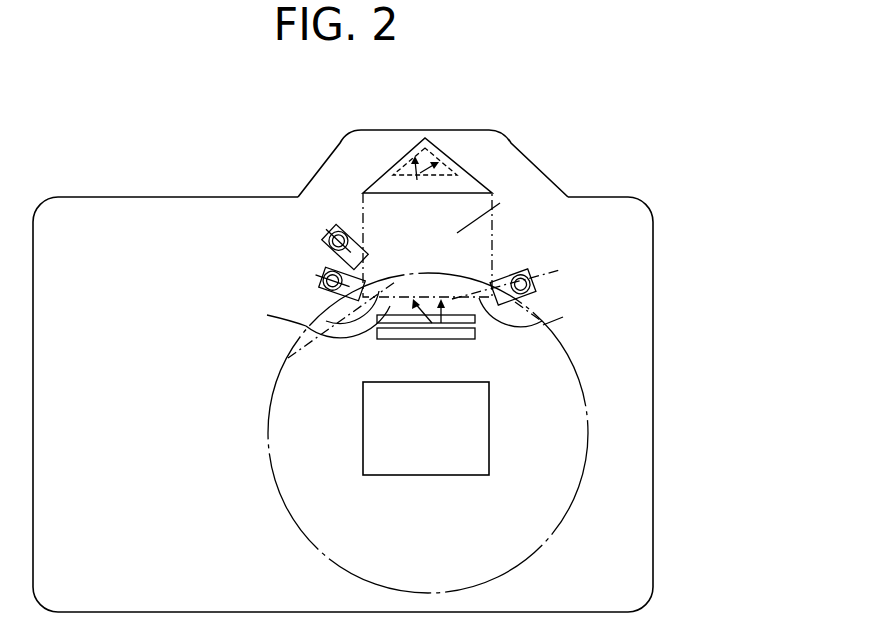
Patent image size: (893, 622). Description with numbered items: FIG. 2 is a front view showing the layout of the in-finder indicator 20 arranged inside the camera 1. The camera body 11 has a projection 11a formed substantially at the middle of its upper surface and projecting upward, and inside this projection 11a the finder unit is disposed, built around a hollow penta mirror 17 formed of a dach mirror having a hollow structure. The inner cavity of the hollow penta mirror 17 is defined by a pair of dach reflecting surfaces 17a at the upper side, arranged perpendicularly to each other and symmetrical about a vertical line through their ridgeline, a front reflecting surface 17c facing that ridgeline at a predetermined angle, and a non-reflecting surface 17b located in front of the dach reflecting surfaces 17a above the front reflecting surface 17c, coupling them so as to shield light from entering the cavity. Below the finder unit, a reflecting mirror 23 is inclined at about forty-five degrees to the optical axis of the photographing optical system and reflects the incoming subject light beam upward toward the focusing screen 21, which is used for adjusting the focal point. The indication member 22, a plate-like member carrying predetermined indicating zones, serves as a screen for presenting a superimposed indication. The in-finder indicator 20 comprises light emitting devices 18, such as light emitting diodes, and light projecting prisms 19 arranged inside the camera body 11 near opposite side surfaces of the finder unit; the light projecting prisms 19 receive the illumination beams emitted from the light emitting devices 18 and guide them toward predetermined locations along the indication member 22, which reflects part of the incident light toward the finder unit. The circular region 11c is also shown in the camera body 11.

The camera 1 is at (703, 188).
The camera body 11 is at (92, 212).
The projection 11a is at (358, 147).
The lens mount / circular opening of camera body 11c is at (592, 456).
The hollow penta mirror 17 is at (438, 98).
The dach reflecting surfaces 17a is at (420, 172).
The non-reflecting surface 17b is at (465, 190).
The front reflecting surface 17c is at (500, 203).
The light emitting devices 18 is at (327, 270).
The light projecting prisms 19 is at (318, 294).
The in-finder indicator 20 is at (297, 152).
The focusing screen 21 is at (477, 330).
The indication member 22 is at (477, 318).
The reflecting mirror 23 is at (480, 460).